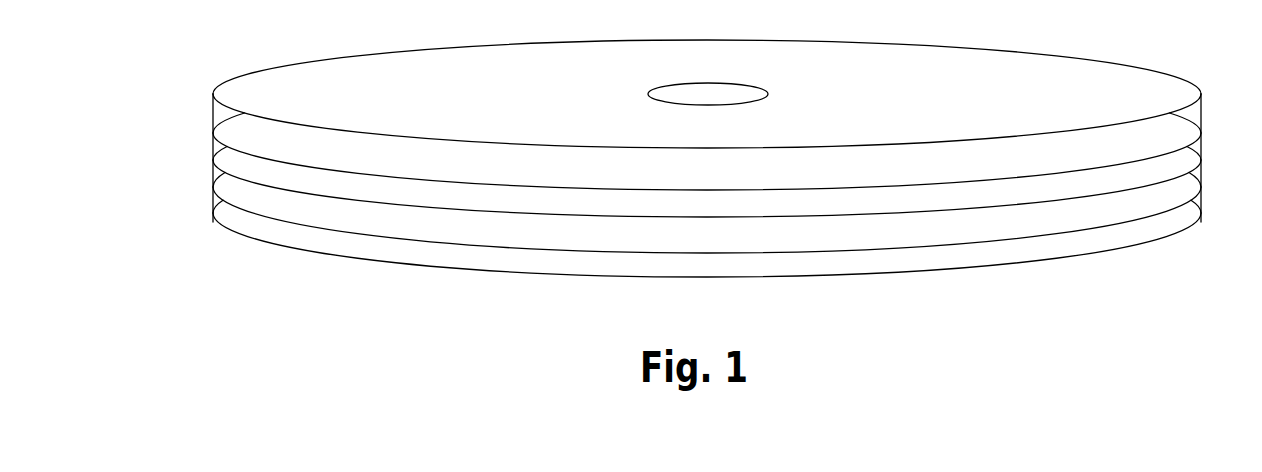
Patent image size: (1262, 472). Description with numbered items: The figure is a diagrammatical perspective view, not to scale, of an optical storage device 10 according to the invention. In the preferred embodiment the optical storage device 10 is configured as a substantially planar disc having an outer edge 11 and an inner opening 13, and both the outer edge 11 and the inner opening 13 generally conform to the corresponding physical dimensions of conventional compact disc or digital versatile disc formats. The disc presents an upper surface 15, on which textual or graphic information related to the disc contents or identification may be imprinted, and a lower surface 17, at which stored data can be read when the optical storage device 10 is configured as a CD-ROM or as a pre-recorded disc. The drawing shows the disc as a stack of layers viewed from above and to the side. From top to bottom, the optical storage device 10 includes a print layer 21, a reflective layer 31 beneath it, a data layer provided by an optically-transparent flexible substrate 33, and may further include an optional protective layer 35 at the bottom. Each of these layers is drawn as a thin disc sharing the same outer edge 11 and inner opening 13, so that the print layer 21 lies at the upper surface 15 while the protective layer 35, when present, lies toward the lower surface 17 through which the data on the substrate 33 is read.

The optical storage device 10 is at (903, 332).
The outer edge 11 is at (213, 133).
The inner opening 13 is at (757, 88).
The upper surface 15 is at (1023, 63).
The lower surface 17 is at (348, 265).
The print layer 21 is at (1203, 111).
The reflective layer 31 is at (1203, 151).
The optically-transparent flexible substrate 33 is at (1203, 181).
The protective layer 35 is at (1203, 212).